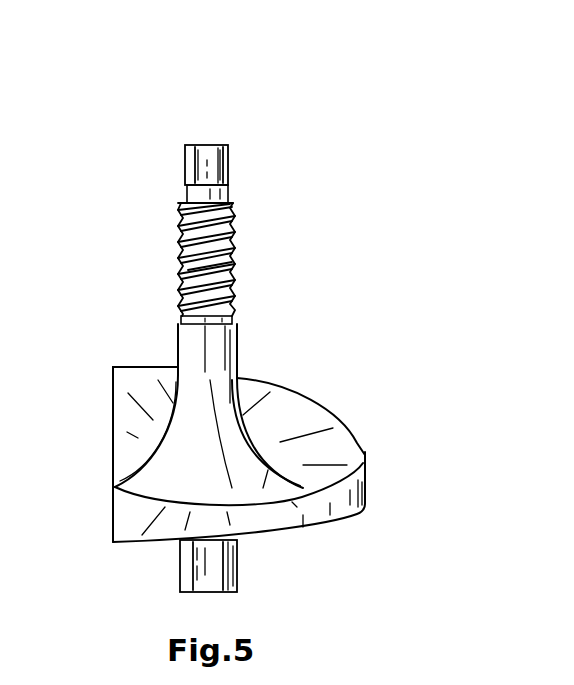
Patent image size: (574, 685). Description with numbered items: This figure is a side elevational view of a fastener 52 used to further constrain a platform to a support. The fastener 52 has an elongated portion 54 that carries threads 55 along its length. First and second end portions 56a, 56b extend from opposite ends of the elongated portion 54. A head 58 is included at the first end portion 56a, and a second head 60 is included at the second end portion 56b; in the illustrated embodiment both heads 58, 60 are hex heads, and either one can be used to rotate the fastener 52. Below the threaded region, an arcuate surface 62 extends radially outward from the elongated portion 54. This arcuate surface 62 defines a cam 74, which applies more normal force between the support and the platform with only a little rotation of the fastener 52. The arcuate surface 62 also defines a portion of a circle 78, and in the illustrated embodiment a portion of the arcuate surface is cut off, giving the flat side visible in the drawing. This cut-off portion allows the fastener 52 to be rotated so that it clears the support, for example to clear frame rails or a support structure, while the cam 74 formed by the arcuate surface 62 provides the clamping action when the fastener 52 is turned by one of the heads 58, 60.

The fastener 52 is at (209, 66).
The head 58 is at (207, 157).
The first end portion 56a is at (228, 160).
The elongated portion 54 is at (236, 283).
The threads 55 is at (205, 267).
The cam 74 is at (332, 487).
The portion of a circle 78 is at (126, 366).
The arcuate surface 62 is at (348, 503).
The head 60 is at (212, 557).
The second end portion 56b is at (237, 570).